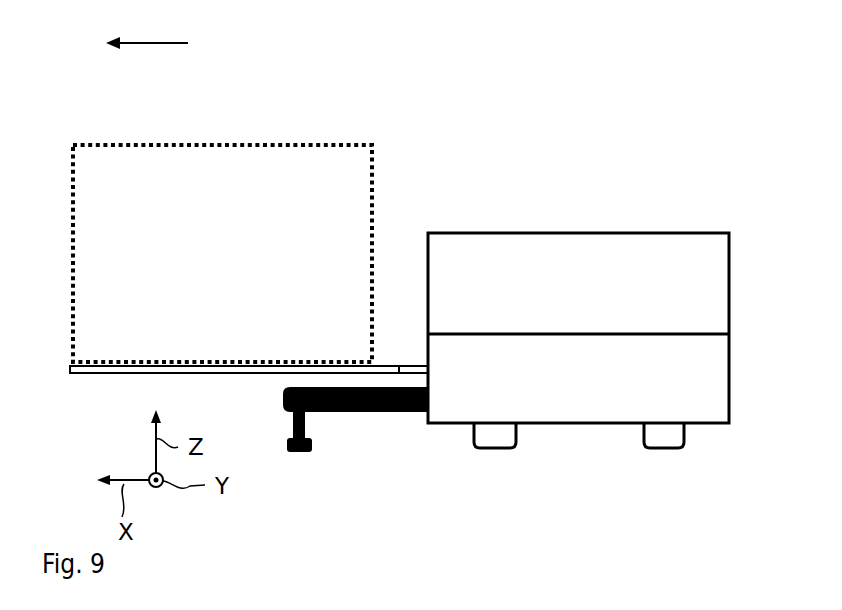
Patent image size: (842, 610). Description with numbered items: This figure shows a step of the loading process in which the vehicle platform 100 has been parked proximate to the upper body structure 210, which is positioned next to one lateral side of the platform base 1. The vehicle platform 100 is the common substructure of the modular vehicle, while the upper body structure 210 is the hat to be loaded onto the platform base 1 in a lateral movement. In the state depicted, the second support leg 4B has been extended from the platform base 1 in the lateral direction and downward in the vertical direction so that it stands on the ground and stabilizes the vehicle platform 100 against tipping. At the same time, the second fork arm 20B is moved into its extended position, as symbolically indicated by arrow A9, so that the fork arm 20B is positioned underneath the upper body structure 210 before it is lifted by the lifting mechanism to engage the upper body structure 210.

The arrow A9 is at (145, 44).
The upper body structure 210 is at (244, 136).
The vehicle platform 100 is at (705, 142).
The platform base 1 is at (460, 231).
The second fork arm 20B is at (97, 374).
The second support leg 4B is at (283, 404).